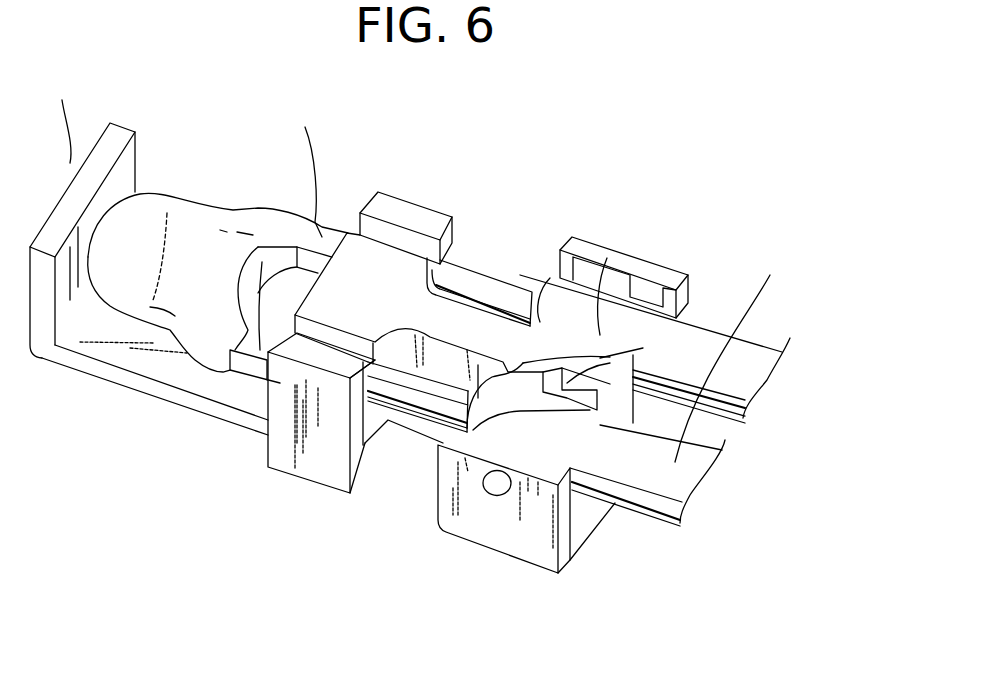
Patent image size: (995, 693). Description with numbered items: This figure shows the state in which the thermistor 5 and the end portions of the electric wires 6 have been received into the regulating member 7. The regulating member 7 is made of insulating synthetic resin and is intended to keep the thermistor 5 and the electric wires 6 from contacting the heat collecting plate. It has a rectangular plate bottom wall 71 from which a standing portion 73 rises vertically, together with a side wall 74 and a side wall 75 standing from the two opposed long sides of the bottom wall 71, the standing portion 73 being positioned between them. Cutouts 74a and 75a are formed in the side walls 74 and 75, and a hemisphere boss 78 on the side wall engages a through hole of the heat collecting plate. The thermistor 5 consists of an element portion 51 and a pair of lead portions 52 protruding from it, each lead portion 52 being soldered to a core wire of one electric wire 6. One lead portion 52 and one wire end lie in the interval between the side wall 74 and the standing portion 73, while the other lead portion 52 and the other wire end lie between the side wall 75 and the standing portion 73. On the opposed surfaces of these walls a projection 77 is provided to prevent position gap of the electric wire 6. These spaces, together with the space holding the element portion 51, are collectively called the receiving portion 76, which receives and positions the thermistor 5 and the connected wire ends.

The thermistor 5 is at (218, 214).
The element portion 51 is at (208, 217).
The lead portions 52 is at (262, 262).
The electric wires 6 is at (737, 383).
The regulating member 7 is at (150, 395).
The bottom wall 71 is at (240, 387).
The standing portion 73 is at (365, 262).
The side wall 74 is at (423, 217).
The cutout 74a is at (458, 240).
The side wall 75 is at (320, 362).
The cutout 75a is at (352, 440).
The receiving portion 76 is at (112, 330).
The projection 77 is at (640, 285).
The hemisphere boss 78 is at (497, 490).